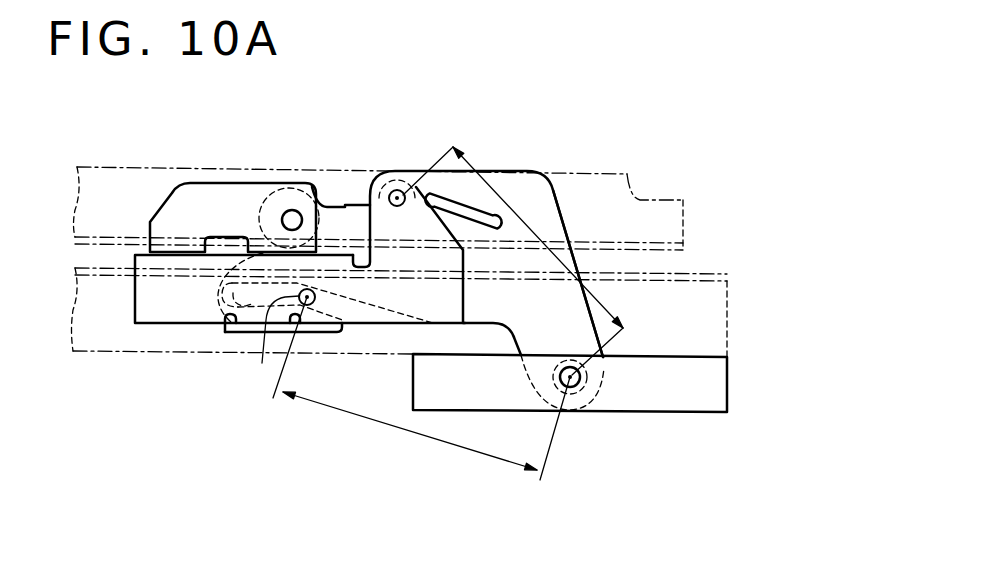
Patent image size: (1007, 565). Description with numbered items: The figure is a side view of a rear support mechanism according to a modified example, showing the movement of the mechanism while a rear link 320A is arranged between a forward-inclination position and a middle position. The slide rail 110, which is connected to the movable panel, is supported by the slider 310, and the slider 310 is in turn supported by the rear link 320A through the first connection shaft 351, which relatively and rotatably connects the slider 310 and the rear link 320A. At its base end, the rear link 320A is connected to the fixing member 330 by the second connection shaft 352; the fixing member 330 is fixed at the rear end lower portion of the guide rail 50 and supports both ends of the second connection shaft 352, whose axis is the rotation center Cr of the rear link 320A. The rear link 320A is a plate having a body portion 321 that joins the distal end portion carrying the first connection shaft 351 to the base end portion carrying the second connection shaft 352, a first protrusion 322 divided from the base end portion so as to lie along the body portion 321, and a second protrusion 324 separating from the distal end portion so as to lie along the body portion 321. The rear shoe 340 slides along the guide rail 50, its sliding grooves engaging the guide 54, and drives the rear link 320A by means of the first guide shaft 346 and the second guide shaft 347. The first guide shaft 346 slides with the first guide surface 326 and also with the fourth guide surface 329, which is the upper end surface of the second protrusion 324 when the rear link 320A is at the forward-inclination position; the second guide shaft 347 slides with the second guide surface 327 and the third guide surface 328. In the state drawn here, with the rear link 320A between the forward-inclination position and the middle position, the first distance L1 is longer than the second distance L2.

The slide rail 110 is at (673, 202).
The guide 54 is at (718, 273).
The guide rail 50 is at (177, 353).
The fixing member 330 is at (727, 383).
The rear shoe 340 is at (135, 312).
The slider 310 is at (173, 190).
The first connection shaft 351 is at (292, 210).
The body portion 321 is at (350, 212).
The rear link 320A is at (563, 208).
The third guide surface 328 is at (537, 178).
The second guide shaft 347 is at (385, 176).
The second guide surface 327 is at (470, 213).
The first protrusion 322 is at (430, 153).
The second distance L2 is at (602, 305).
The second connection shaft 352 is at (567, 368).
The rotation center Cr is at (583, 380).
The fourth guide surface 329 is at (212, 297).
The first guide surface 326 is at (368, 303).
The second protrusion 324 is at (315, 332).
The first guide shaft 346 is at (262, 347).
The first distance L1 is at (403, 430).